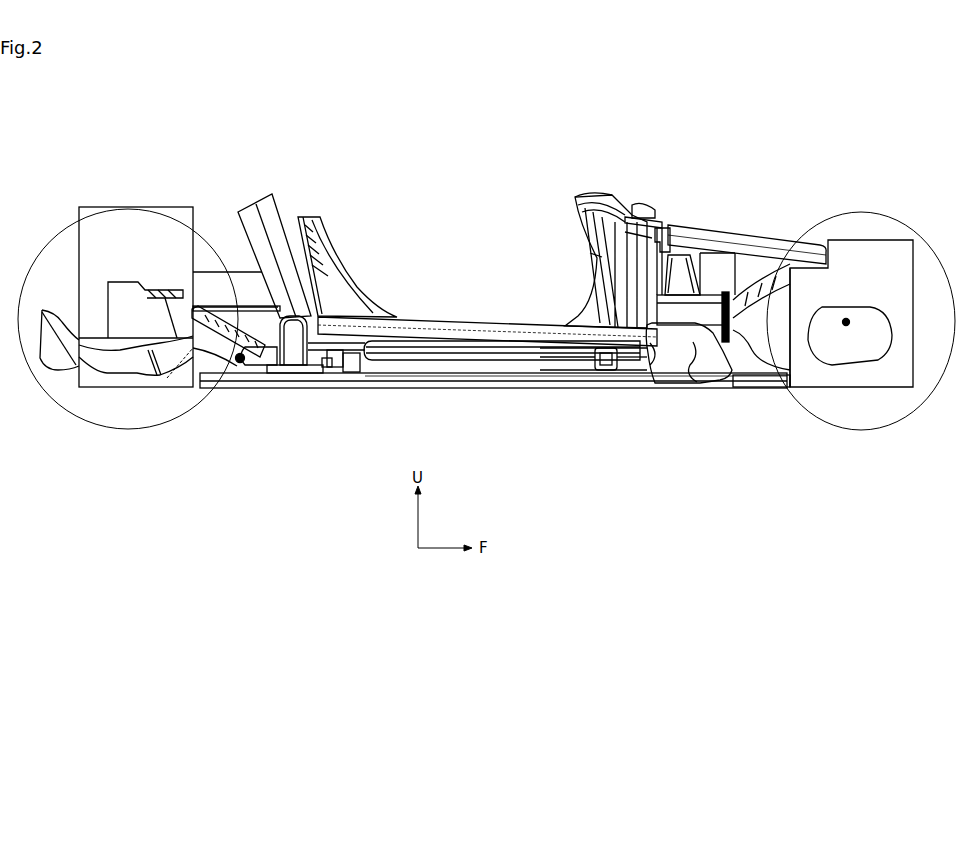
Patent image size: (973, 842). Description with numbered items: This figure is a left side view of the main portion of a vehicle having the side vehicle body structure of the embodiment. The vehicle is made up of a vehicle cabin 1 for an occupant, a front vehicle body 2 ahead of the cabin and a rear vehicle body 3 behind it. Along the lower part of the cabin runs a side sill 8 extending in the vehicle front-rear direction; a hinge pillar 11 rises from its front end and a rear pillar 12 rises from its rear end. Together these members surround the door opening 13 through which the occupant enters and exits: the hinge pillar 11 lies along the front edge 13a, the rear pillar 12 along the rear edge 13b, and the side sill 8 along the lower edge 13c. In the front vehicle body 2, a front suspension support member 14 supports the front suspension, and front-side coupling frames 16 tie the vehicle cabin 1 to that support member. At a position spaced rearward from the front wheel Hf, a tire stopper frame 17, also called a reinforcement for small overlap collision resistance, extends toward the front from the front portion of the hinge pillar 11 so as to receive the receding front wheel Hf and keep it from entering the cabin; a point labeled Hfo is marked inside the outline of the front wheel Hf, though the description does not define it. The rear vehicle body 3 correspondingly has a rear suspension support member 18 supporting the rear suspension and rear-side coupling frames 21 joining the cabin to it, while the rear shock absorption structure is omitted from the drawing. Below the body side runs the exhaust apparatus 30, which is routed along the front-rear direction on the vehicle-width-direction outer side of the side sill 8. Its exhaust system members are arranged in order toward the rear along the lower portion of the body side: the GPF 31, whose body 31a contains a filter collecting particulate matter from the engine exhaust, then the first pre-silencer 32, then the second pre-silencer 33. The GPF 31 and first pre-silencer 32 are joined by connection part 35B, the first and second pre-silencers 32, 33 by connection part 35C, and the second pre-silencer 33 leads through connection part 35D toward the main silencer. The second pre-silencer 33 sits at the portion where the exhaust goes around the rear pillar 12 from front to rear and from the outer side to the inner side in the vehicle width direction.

The vehicle cabin 1 is at (613, 173).
The front vehicle body 2 is at (777, 163).
The rear vehicle body 3 is at (203, 202).
The side sill 8 is at (493, 406).
The hinge pillar 11 is at (648, 203).
The rear pillar 12 is at (285, 210).
The door opening 13 is at (436, 244).
The front edge of the door opening 13a is at (578, 278).
The rear edge of the door opening 13b is at (337, 234).
The lower edge of the door opening 13c is at (497, 312).
The front suspension support member 14 is at (852, 240).
The front-side coupling frame 16 is at (720, 228).
The tire stopper frame 17 is at (733, 333).
The rear suspension support member 18 is at (98, 207).
The rear-side coupling frame 21 is at (236, 352).
The exhaust apparatus 30 is at (507, 379).
The GPF 31 is at (737, 387).
The body of the GPF 31a is at (667, 378).
The first pre-silencer 32 is at (455, 385).
The second pre-silencer 33 is at (287, 385).
The connection part 35B is at (600, 392).
The connection part 35C is at (341, 379).
The connection part 35D is at (237, 335).
The front wheel Hf is at (873, 430).
The front wheel house center Hfo is at (848, 320).